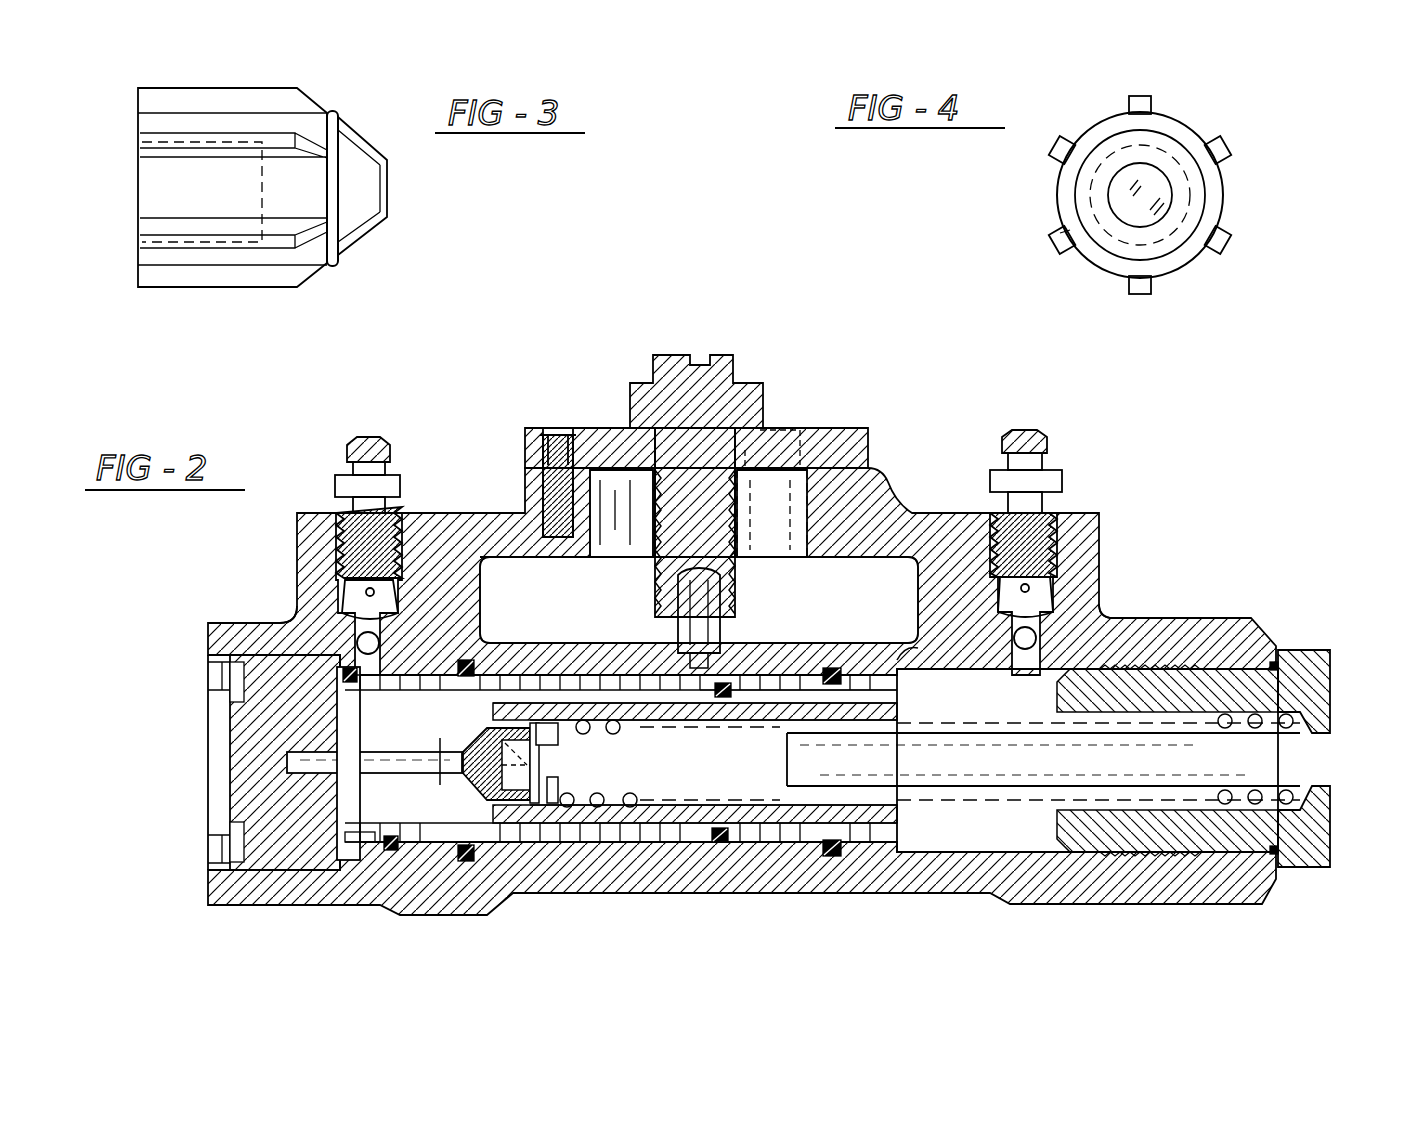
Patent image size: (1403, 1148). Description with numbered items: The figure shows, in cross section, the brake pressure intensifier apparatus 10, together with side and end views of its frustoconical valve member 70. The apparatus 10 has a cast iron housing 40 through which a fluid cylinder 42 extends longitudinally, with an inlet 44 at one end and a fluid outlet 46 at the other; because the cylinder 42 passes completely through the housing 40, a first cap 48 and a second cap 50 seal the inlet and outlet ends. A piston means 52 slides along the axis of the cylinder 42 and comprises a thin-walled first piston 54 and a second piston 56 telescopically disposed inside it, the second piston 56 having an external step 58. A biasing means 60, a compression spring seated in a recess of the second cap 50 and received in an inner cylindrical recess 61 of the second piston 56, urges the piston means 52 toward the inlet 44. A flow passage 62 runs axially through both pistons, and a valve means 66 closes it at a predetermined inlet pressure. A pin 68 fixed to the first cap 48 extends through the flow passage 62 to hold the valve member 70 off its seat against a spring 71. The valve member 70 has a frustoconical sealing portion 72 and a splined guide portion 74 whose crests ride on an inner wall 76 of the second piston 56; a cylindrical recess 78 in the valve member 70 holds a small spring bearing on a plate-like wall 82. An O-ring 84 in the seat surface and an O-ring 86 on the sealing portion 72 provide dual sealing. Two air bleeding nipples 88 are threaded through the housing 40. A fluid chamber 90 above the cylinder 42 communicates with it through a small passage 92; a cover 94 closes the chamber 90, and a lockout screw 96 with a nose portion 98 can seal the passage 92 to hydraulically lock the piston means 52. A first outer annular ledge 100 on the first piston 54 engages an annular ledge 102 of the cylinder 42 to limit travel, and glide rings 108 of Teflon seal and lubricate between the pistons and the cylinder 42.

In FIG. 2, the brake pressure intensifier apparatus 10 is at (1195, 445).
In FIG. 2, the housing 40 is at (1093, 535).
In FIG. 2, the fluid cylinder 42 is at (928, 893).
In FIG. 2, the inlet 44 is at (368, 652).
In FIG. 2, the fluid outlet 46 is at (1113, 600).
In FIG. 2, the first cap 48 is at (215, 798).
In FIG. 2, the second cap 50 is at (1315, 690).
In FIG. 2, the piston means 52 is at (560, 835).
In FIG. 2, the first piston 54 is at (345, 870).
In FIG. 2, the second piston 56 is at (640, 815).
In FIG. 2, the external step 58 is at (590, 830).
In FIG. 2, the biasing means 60 is at (1245, 802).
In FIG. 2, the inner cylindrical recess 61 is at (790, 800).
In FIG. 2, the flow passage 62 is at (345, 720).
In FIG. 2, the valve means 66 is at (495, 718).
In FIG. 2, the pin 68 is at (300, 762).
In FIG. 3, the valve member 70 is at (275, 287).
In FIG. 4, the valve member 70 is at (1060, 255).
In FIG. 2, the valve member 70 is at (530, 767).
In FIG. 2, the spring 71 is at (555, 782).
In FIG. 3, the frustoconical sealing portion 72 is at (360, 235).
In FIG. 4, the frustoconical sealing portion 72 is at (1168, 245).
In FIG. 3, the splined guide portion 74 is at (138, 92).
In FIG. 4, the splined guide portion 74 is at (1215, 142).
In FIG. 2, the inner wall 76 is at (540, 703).
In FIG. 3, the cylindrical recess 78 is at (165, 155).
In FIG. 4, the cylindrical recess 78 is at (1092, 197).
In FIG. 2, the plate-like wall 82 is at (558, 735).
In FIG. 2, the O-ring 84 is at (365, 842).
In FIG. 3, the O-ring 86 is at (335, 112).
In FIG. 4, the O-ring 86 is at (1105, 268).
In FIG. 2, the air bleeding nipples 88 is at (388, 440).
In FIG. 2, the fluid chamber 90 is at (878, 562).
In FIG. 2, the passage 92 is at (705, 665).
In FIG. 2, the cover 94 is at (852, 428).
In FIG. 2, the lockout screw 96 is at (712, 352).
In FIG. 2, the nose portion 98 is at (676, 614).
In FIG. 2, the first outer annular ledge 100 is at (905, 660).
In FIG. 2, the annular ledge 102 is at (790, 748).
In FIG. 2, the glide rings 108 is at (466, 668).